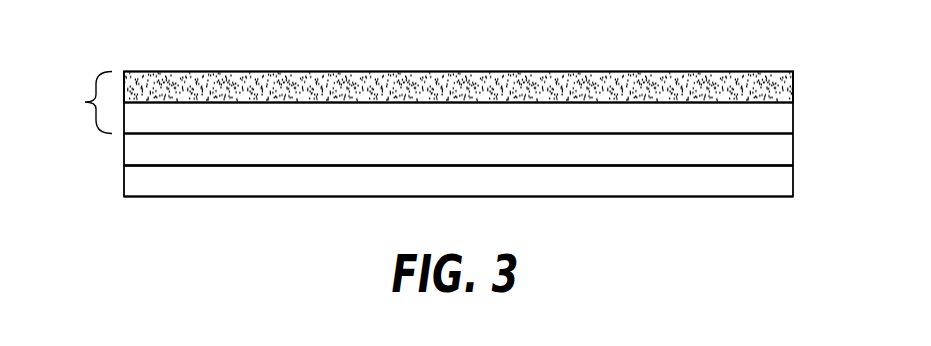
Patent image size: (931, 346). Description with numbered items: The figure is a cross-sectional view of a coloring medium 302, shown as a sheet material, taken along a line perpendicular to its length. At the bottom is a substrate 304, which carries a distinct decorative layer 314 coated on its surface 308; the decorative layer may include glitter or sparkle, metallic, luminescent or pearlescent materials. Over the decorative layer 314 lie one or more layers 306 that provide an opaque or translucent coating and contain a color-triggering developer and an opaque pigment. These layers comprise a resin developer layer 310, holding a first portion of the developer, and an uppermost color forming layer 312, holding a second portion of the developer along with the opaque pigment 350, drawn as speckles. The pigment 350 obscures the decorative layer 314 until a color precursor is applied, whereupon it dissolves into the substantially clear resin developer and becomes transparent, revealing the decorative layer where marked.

The coloring medium 302 is at (178, 43).
The one or more layers 306 is at (79, 103).
The color forming layer 312 is at (793, 87).
The opaque pigment 350 is at (615, 85).
The resin developer layer 310 is at (793, 118).
The distinct decorative layer 314 is at (793, 150).
The substrate 304 is at (793, 181).
The surface 308 is at (643, 166).